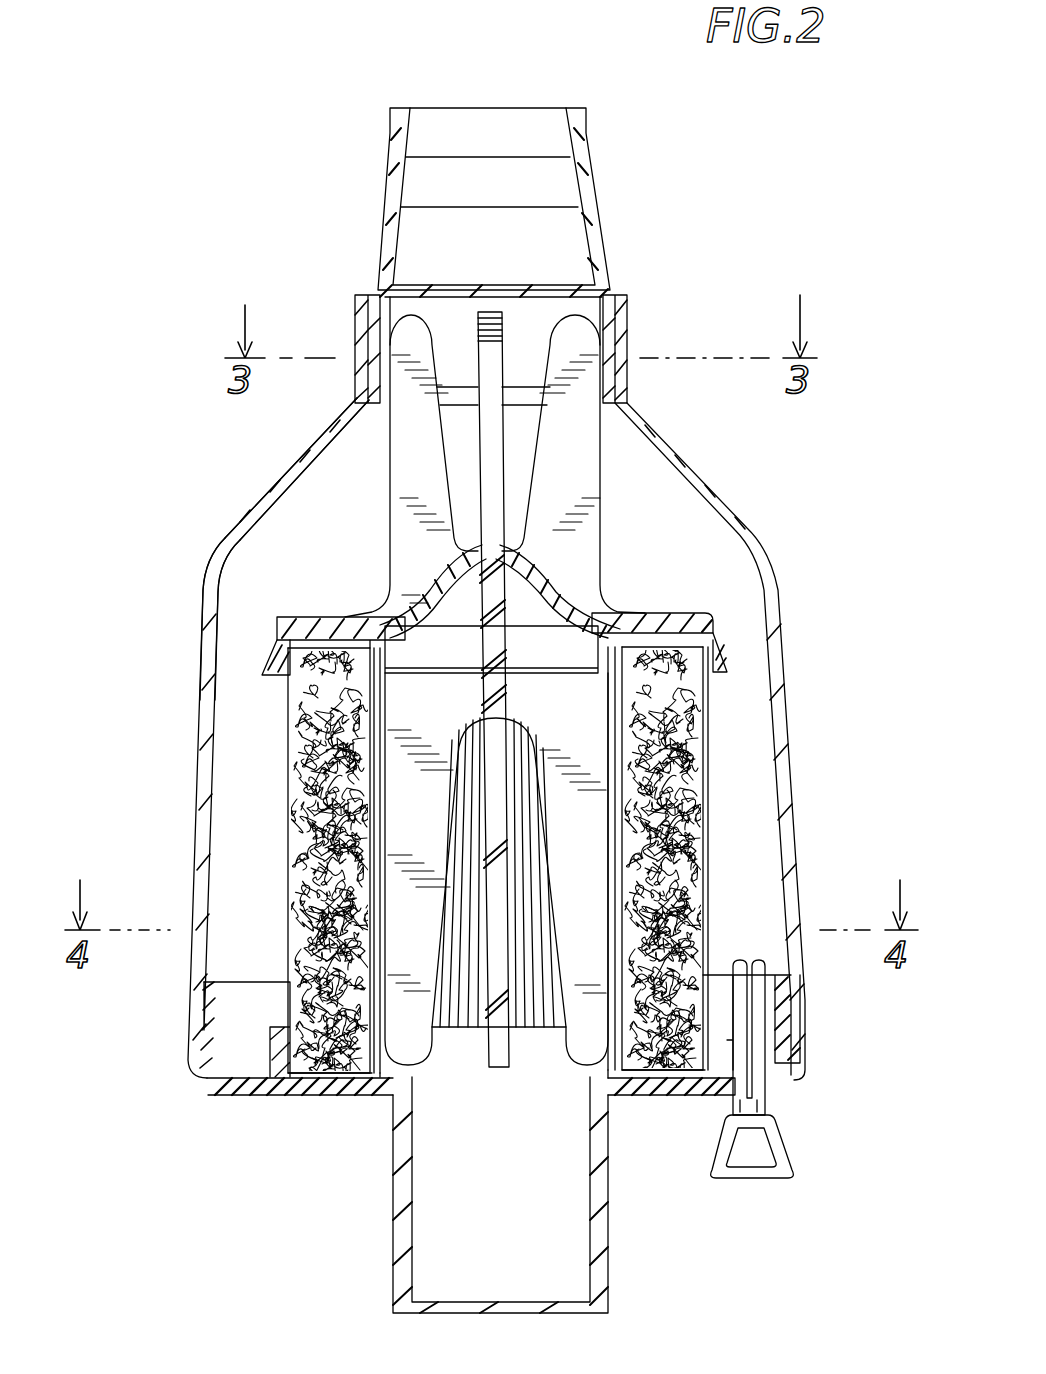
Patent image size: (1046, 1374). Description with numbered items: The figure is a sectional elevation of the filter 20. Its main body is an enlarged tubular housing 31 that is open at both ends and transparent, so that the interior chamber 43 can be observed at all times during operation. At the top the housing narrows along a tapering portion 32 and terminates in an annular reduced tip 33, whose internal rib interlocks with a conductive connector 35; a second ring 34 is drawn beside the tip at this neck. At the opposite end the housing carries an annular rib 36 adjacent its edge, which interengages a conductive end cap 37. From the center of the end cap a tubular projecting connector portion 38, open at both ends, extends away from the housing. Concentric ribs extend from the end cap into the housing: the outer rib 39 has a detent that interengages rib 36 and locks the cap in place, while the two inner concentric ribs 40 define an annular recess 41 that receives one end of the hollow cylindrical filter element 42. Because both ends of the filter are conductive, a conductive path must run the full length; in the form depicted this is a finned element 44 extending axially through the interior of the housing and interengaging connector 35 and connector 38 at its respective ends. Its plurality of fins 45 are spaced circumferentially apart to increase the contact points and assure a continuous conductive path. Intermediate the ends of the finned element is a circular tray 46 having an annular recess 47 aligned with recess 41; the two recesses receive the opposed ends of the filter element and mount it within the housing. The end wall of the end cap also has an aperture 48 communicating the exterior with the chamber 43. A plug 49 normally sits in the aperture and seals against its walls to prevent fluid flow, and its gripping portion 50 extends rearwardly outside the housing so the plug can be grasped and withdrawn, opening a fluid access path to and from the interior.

The filter 20 is at (178, 484).
The enlarged tubular housing 31 is at (198, 700).
The tapering portion 32 is at (292, 462).
The annular reduced tip 33 is at (357, 365).
The neck ring 34 is at (612, 342).
The conductive connector 35 is at (594, 212).
The annular rib 36 is at (800, 1033).
The conductive end cap 37 is at (200, 1086).
The projecting connector portion 38 is at (393, 1228).
The outer rib 39 is at (210, 1030).
The inner concentric ribs 40 is at (250, 1095).
The annular recess 41 is at (303, 1097).
The filter element 42 is at (294, 783).
The interior chamber 43 is at (250, 601).
The finned element 44 is at (427, 597).
The fins 45 is at (503, 320).
The circular tray 46 is at (700, 644).
The annular recess 47 is at (677, 640).
The aperture 48 is at (752, 1082).
The plug 49 is at (750, 1102).
The gripping portion 50 is at (712, 1168).